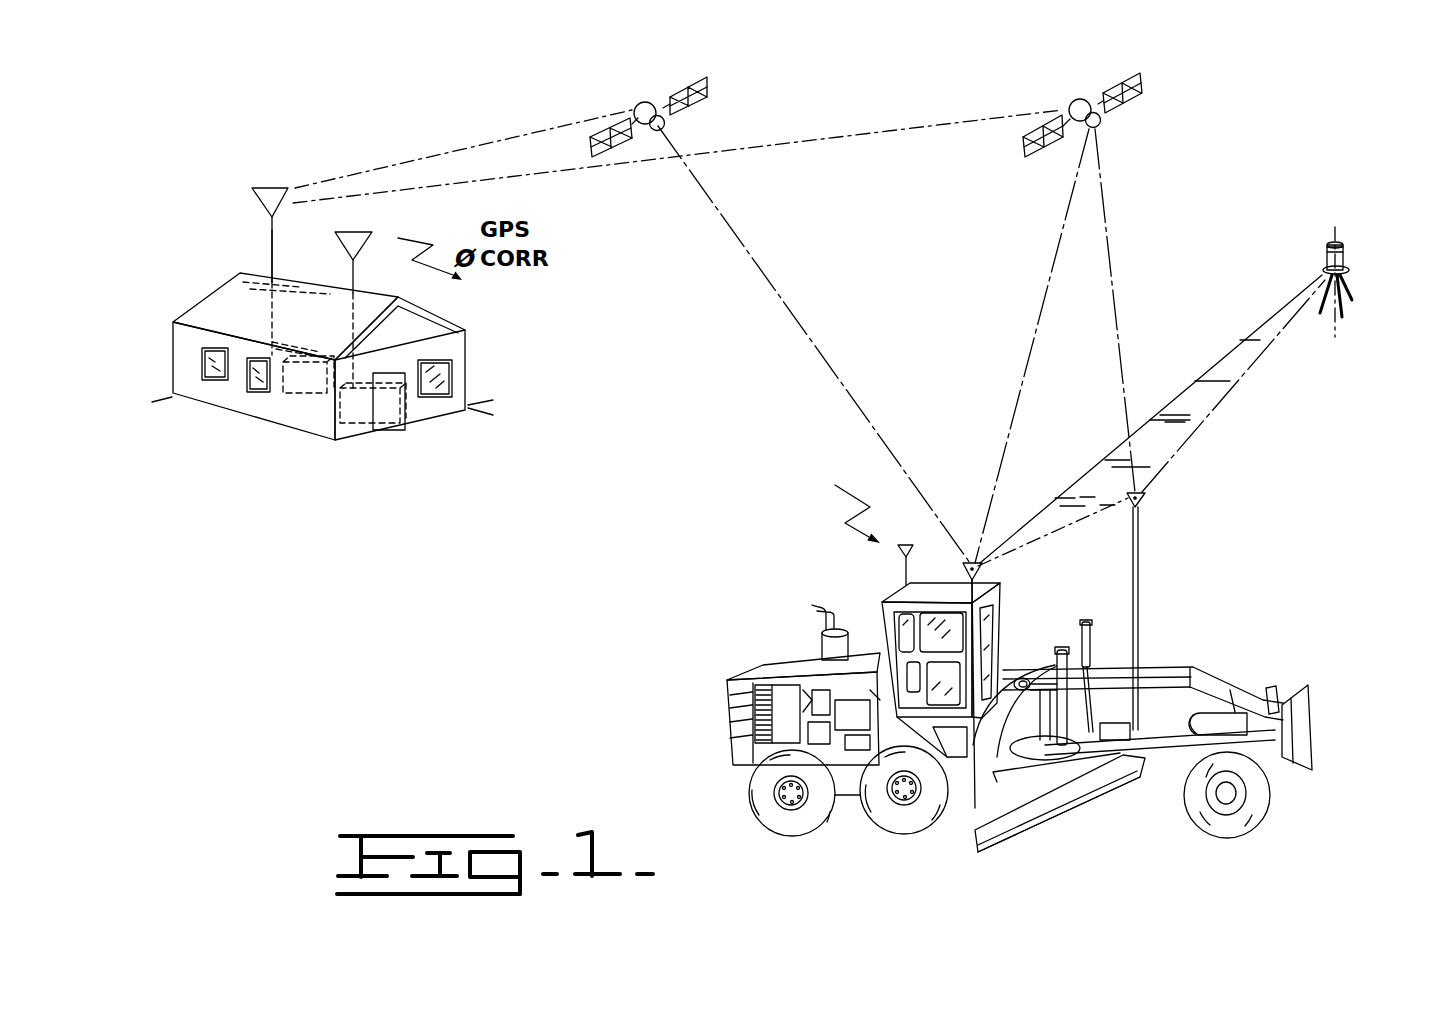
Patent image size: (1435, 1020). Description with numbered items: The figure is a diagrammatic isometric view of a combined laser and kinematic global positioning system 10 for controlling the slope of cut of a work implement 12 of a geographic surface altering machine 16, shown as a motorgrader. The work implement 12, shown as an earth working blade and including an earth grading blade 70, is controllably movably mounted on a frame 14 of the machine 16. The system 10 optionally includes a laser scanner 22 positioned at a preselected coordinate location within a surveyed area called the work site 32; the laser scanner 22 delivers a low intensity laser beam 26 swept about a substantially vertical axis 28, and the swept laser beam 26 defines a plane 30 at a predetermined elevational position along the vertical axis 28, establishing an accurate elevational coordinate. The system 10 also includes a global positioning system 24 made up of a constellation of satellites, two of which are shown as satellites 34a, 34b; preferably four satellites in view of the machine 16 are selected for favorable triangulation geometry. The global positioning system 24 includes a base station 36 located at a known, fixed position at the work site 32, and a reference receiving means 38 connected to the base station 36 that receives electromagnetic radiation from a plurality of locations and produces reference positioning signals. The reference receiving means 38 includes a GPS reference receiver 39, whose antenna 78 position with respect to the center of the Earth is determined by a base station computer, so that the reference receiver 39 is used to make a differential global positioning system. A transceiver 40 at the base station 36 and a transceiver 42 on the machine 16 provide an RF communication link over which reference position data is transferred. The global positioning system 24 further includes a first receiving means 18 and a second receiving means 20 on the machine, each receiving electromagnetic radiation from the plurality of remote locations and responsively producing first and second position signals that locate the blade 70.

The system 10 is at (399, 755).
The work implement 12 is at (1079, 816).
The frame 14 is at (1247, 688).
The geographic surface altering machine 16 is at (717, 745).
The first receiving means 18 is at (963, 812).
The second receiving means 20 is at (1127, 713).
The laser scanner 22 is at (1353, 254).
The global positioning system 24 is at (460, 502).
The laser beam 26 is at (1262, 345).
The vertical axis 28 is at (1337, 238).
The plane 30 is at (1218, 400).
The work site 32 is at (615, 578).
The satellite 34a is at (650, 102).
The satellite 34b is at (1077, 101).
The base station 36 is at (486, 358).
The reference receiving means 38 is at (247, 251).
The GPS reference receiver 39 is at (283, 392).
The transceiver 40 is at (380, 247).
The transceiver 42 is at (887, 561).
The earth grading blade 70 is at (1002, 820).
The antenna 78 is at (258, 207).